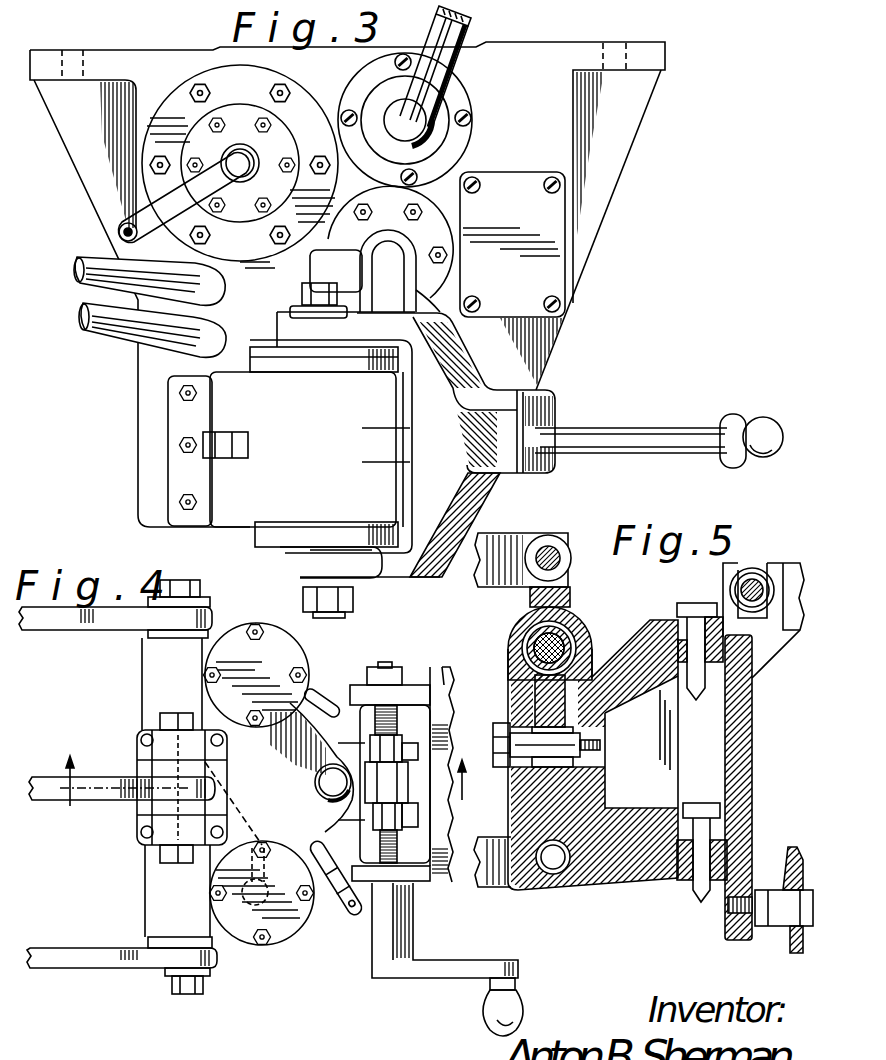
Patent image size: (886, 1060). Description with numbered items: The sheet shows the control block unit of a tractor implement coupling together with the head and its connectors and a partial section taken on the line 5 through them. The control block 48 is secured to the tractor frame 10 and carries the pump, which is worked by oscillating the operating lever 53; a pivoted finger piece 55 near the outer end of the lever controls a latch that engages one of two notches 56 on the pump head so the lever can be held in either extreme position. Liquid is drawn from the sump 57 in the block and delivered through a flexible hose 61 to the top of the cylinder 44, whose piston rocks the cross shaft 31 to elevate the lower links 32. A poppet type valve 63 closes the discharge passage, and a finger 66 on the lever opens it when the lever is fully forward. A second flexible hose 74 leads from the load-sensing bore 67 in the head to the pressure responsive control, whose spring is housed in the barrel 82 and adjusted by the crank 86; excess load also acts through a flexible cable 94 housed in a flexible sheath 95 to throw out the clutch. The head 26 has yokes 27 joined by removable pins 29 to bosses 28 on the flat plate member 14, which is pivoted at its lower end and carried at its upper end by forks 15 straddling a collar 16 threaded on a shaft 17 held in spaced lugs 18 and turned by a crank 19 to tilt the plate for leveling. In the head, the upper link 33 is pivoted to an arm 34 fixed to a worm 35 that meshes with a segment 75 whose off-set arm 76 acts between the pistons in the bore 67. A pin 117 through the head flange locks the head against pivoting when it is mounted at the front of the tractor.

In FIG. 4, the section line 5 is at (261, 781).
In FIG. 4, the frame 10 is at (443, 720).
In FIG. 5, the flat plate member 14 is at (752, 758).
In FIG. 4, the forks 15 is at (410, 748).
In FIG. 5, the forks 15 is at (724, 568).
In FIG. 4, the collar 16 is at (460, 783).
In FIG. 5, the collar 16 is at (749, 573).
In FIG. 4, the shaft 17 is at (397, 850).
In FIG. 5, the shaft 17 is at (758, 575).
In FIG. 4, the lugs 18 is at (411, 690).
In FIG. 5, the lugs 18 is at (797, 630).
In FIG. 4, the crank 19 is at (442, 975).
In FIG. 4, the head 26 is at (155, 883).
In FIG. 5, the head 26 is at (605, 786).
In FIG. 5, the yokes 27 is at (650, 632).
In FIG. 5, the bosses 28 is at (680, 887).
In FIG. 4, the removable pins 29 is at (325, 779).
In FIG. 5, the removable pins 29 is at (690, 604).
In FIG. 4, the cross shaft 31 is at (186, 583).
In FIG. 5, the cross shaft 31 is at (552, 878).
In FIG. 4, the lower links 32 is at (55, 622).
In FIG. 5, the lower links 32 is at (492, 880).
In FIG. 4, the upper link 33 is at (88, 786).
In FIG. 5, the upper link 33 is at (505, 547).
In FIG. 4, the arm 34 is at (160, 757).
In FIG. 5, the arm 34 is at (570, 593).
In FIG. 5, the worm 35 is at (588, 632).
In FIG. 4, the cylinder 44 is at (282, 655).
In FIG. 3, the control block 48 is at (558, 154).
In FIG. 3, the operating lever 53 is at (604, 432).
In FIG. 3, the pivoted finger piece 55 is at (730, 466).
In FIG. 3, the notches 56 is at (218, 440).
In FIG. 3, the sump 57 is at (548, 262).
In FIG. 3, the flexible hose 61 is at (98, 258).
In FIG. 4, the flexible hose 61 is at (338, 903).
In FIG. 3, the poppet type valve 63 is at (437, 226).
In FIG. 3, the finger 66 is at (402, 284).
In FIG. 4, the second cylindrical bore 67 is at (245, 928).
In FIG. 3, the flexible hose 74 is at (118, 340).
In FIG. 4, the flexible hose 74 is at (343, 913).
In FIG. 5, the segment 75 is at (560, 690).
In FIG. 4, the off-set arm 76 is at (240, 816).
In FIG. 3, the barrel 82 is at (237, 112).
In FIG. 3, the crank 86 is at (115, 212).
In FIG. 3, the flexible cable 94 is at (464, 22).
In FIG. 3, the flexible sheath 95 is at (458, 62).
In FIG. 4, the pin 117 is at (324, 827).